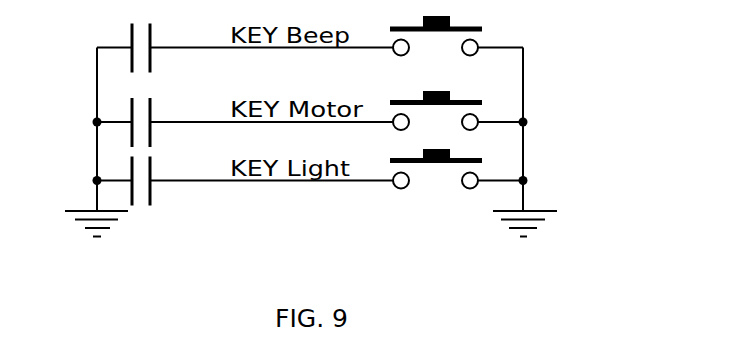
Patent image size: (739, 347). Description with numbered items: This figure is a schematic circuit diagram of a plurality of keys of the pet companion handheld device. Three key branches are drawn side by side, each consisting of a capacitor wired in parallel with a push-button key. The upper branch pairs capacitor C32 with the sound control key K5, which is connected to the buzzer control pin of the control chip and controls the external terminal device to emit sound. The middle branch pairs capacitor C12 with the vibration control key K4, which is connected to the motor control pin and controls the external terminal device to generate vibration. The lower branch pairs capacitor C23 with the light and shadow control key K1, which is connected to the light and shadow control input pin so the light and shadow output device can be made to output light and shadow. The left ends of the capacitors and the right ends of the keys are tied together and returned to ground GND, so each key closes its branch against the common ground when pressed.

The capacitor C32 (100nF) for KEY Beep C32 is at (245, 50).
The capacitor C12 (100nF) for KEY Motor C12 is at (245, 124).
The capacitor C23 (100nF) for KEY Light C23 is at (245, 183).
The sound control key K5 is at (456, 28).
The vibration control key K4 is at (456, 102).
The light and shadow control key K1 is at (456, 160).
The ground GND is at (311, 239).